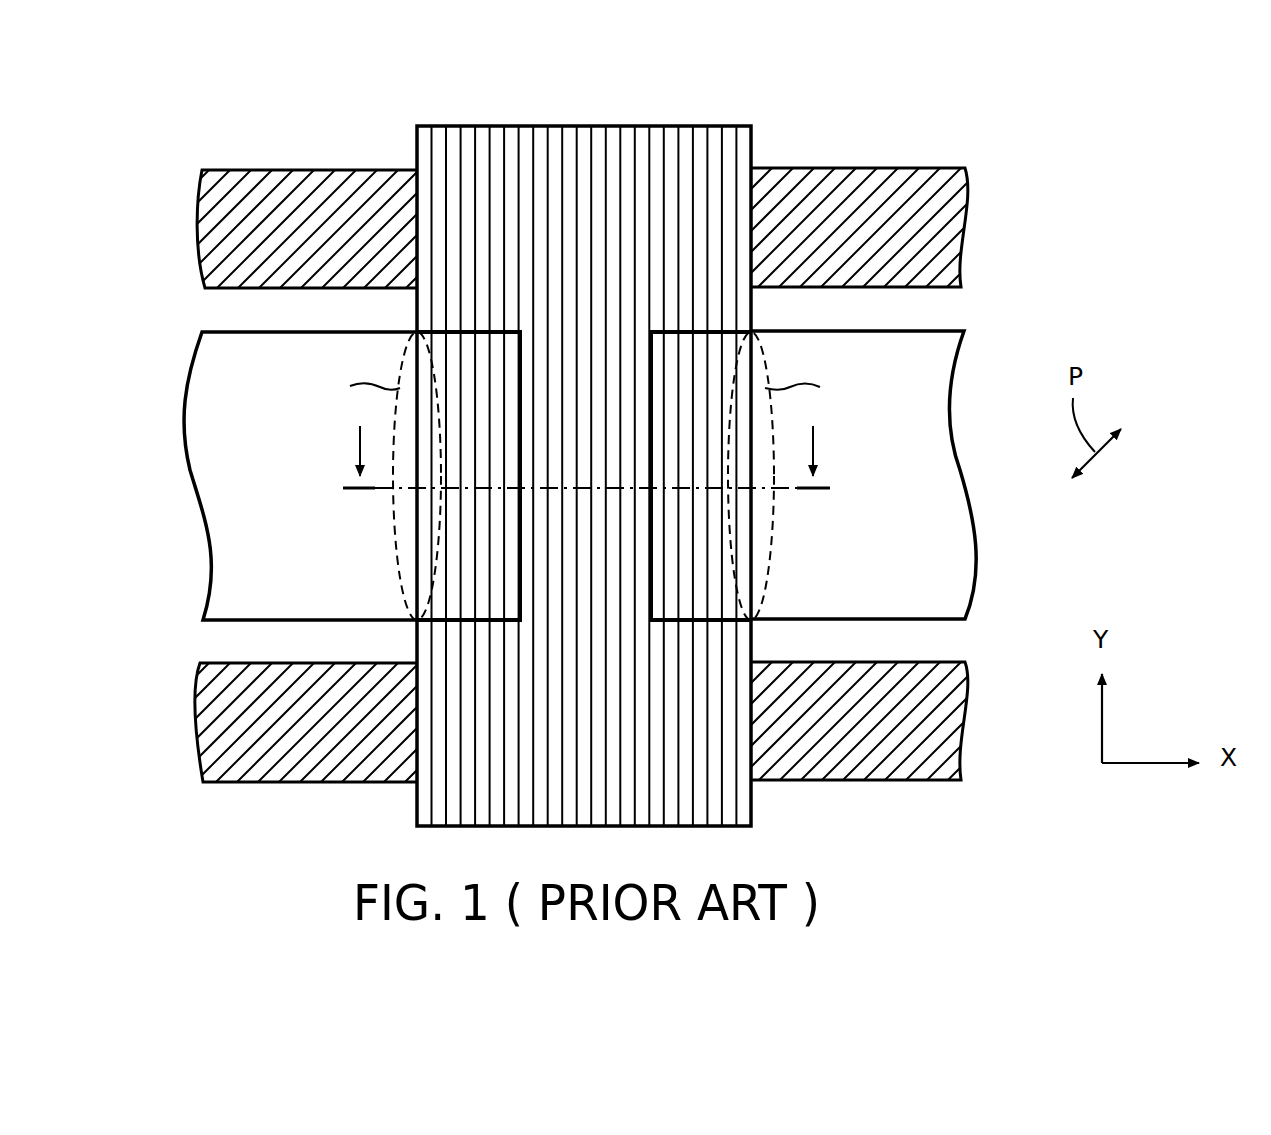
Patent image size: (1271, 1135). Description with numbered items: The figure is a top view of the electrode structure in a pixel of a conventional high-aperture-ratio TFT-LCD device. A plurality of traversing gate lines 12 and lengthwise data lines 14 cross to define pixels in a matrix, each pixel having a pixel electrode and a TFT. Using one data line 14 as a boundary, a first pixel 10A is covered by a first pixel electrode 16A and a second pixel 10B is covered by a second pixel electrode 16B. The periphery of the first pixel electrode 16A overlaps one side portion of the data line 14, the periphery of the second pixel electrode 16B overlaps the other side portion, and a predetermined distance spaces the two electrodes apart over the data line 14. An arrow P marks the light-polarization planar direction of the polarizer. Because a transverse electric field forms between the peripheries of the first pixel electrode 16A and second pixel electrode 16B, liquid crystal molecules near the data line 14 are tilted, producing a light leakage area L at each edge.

The first pixel 10A is at (887, 436).
The second pixel 10B is at (283, 436).
The gate line 12 is at (846, 188).
The data line 14 is at (598, 143).
The first pixel electrode 16A is at (947, 452).
The second pixel electrode 16B is at (312, 453).